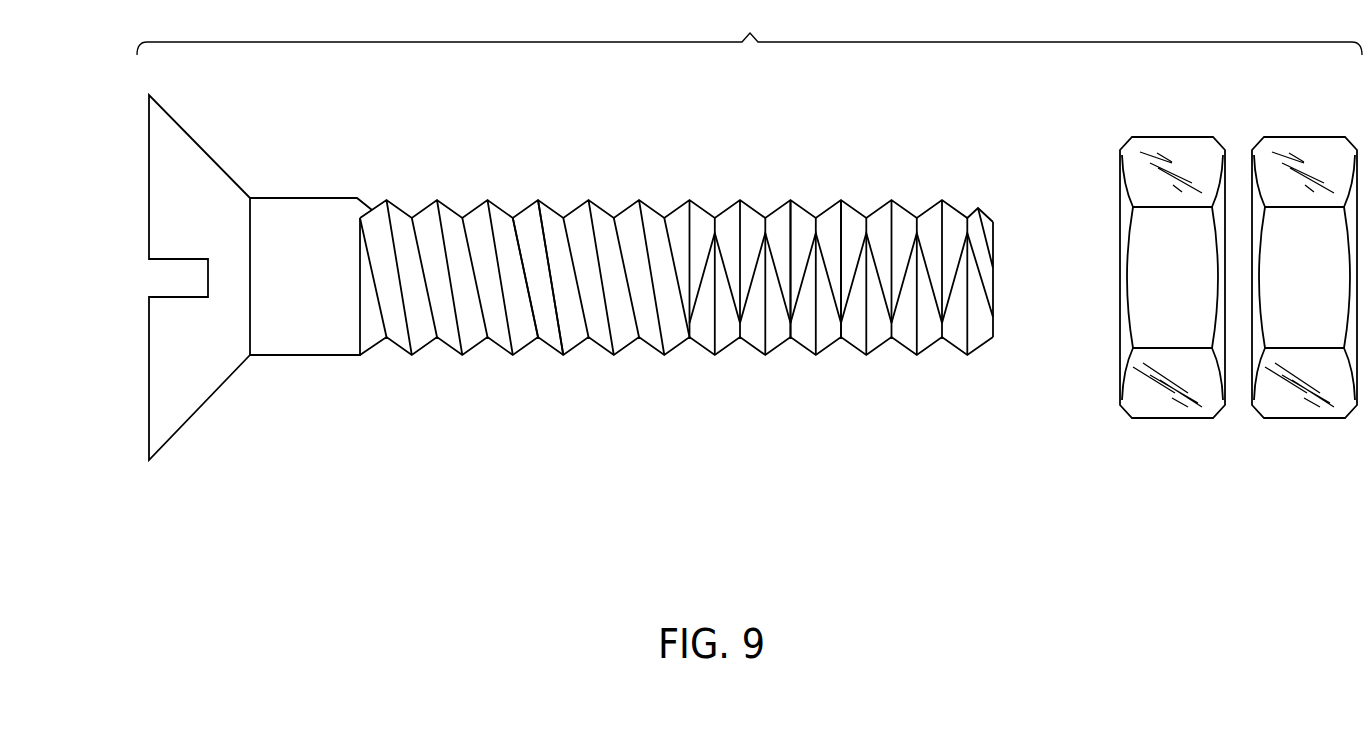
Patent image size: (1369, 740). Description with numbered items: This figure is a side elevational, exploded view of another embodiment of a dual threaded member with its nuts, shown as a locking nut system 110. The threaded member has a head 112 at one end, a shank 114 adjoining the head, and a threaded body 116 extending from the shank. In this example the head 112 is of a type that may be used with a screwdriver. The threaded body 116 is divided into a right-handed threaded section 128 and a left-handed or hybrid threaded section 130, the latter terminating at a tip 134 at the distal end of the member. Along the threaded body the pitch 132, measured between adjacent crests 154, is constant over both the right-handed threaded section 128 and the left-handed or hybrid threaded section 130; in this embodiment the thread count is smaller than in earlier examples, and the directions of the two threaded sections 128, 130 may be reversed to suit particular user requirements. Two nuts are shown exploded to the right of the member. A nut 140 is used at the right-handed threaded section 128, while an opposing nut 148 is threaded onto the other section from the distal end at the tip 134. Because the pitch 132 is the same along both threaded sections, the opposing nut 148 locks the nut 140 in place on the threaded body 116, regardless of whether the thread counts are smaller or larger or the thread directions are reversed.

The locking nut system 110 is at (130, 238).
The head 112 is at (149, 350).
The shank 114 is at (322, 283).
The threaded body 116 is at (1012, 199).
The right-handed threaded section 128 is at (373, 178).
The left-handed or hybrid threaded section 130 is at (688, 380).
The pitch 132 is at (510, 370).
The tip 134 is at (993, 277).
The nut 140 is at (1198, 283).
The opposing nut 148 is at (1330, 283).
The crests 154 is at (412, 357).